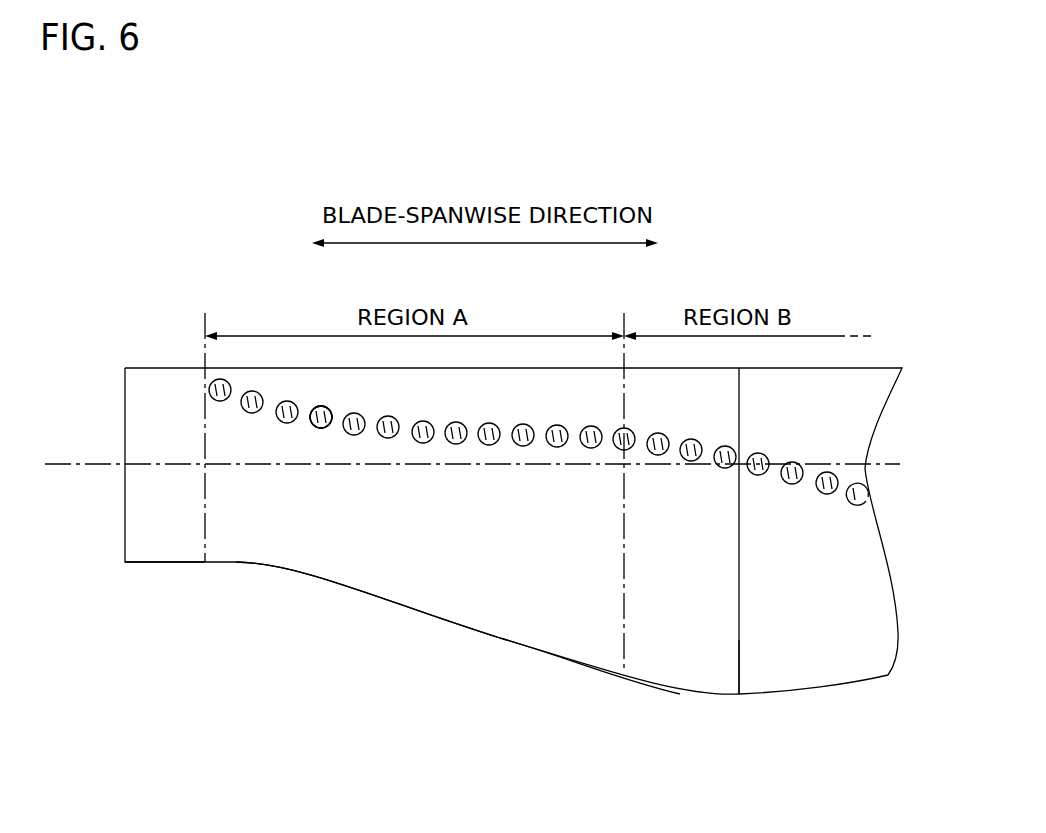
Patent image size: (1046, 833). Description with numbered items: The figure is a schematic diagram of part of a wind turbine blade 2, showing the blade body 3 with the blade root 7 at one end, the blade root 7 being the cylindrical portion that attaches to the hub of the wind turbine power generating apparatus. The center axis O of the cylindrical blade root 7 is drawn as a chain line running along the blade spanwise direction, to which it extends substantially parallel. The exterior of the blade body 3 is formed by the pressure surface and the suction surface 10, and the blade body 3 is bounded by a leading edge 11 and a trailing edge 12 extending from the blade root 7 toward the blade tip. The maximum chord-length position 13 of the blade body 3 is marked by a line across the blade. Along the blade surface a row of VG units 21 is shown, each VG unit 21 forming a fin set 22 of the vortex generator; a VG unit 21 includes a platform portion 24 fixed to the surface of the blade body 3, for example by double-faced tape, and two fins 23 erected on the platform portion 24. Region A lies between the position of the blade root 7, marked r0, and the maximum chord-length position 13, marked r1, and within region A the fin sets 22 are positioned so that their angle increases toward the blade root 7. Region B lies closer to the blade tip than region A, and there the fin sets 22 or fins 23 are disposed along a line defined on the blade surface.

The turbine rotor blade 2 is at (834, 243).
The blade body 3 is at (693, 667).
The blade root 7 is at (125, 395).
The suction surface 10 is at (465, 600).
The leading edge 11 is at (583, 368).
The trailing edge 12 is at (550, 656).
The maximum chord-length position 13 is at (740, 406).
The VG unit 21 is at (538, 459).
The fin set 22 is at (220, 402).
The fin 23 is at (313, 413).
The platform portion 24 is at (320, 407).
The center axis O is at (58, 463).
The position of the blade root r0 is at (125, 529).
The position of the maximum chord-length position r1 is at (740, 656).